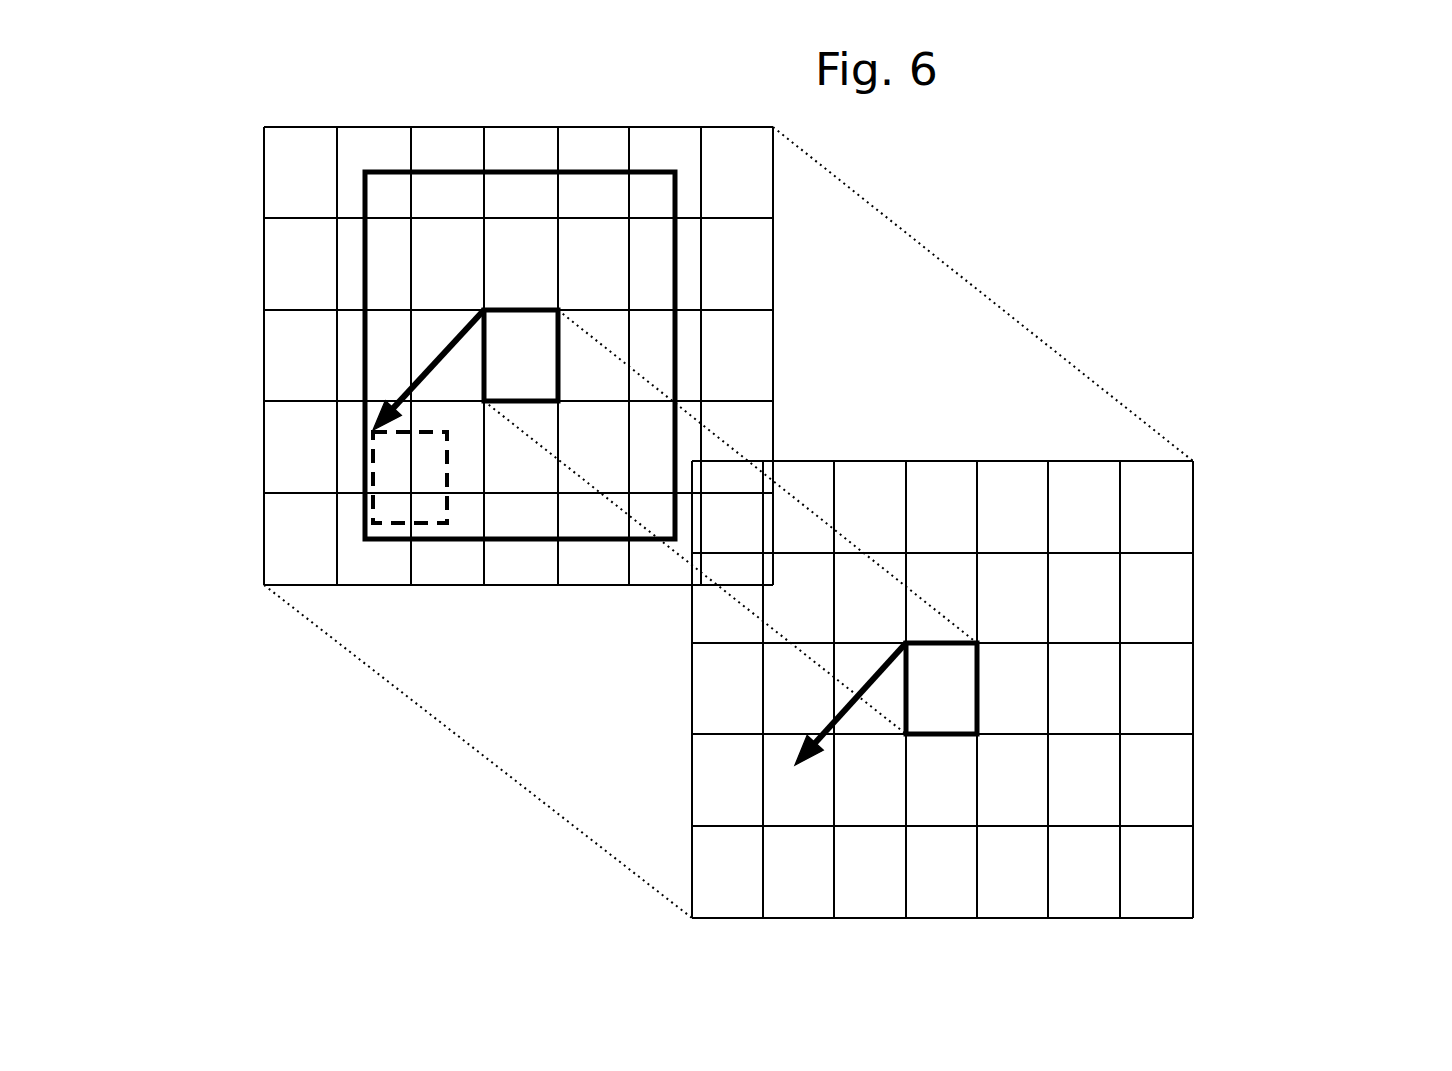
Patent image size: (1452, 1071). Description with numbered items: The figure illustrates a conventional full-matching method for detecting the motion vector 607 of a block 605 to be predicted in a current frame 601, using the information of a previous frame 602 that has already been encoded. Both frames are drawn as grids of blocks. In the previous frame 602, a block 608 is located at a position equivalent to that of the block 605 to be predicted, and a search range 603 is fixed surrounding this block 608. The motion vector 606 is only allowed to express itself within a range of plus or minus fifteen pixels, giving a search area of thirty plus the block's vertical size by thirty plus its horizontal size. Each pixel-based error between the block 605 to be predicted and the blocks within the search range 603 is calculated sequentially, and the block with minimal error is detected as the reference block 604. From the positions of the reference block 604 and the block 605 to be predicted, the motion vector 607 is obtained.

The current frame 601 is at (1193, 521).
The previous frame 602 is at (773, 238).
The search range 603 is at (676, 355).
The reference block 604 is at (437, 523).
The block to be predicted 605 is at (977, 692).
The motion vector 606 is at (430, 364).
The motion vector 607 is at (822, 733).
The block in the previous frame 608 is at (522, 308).